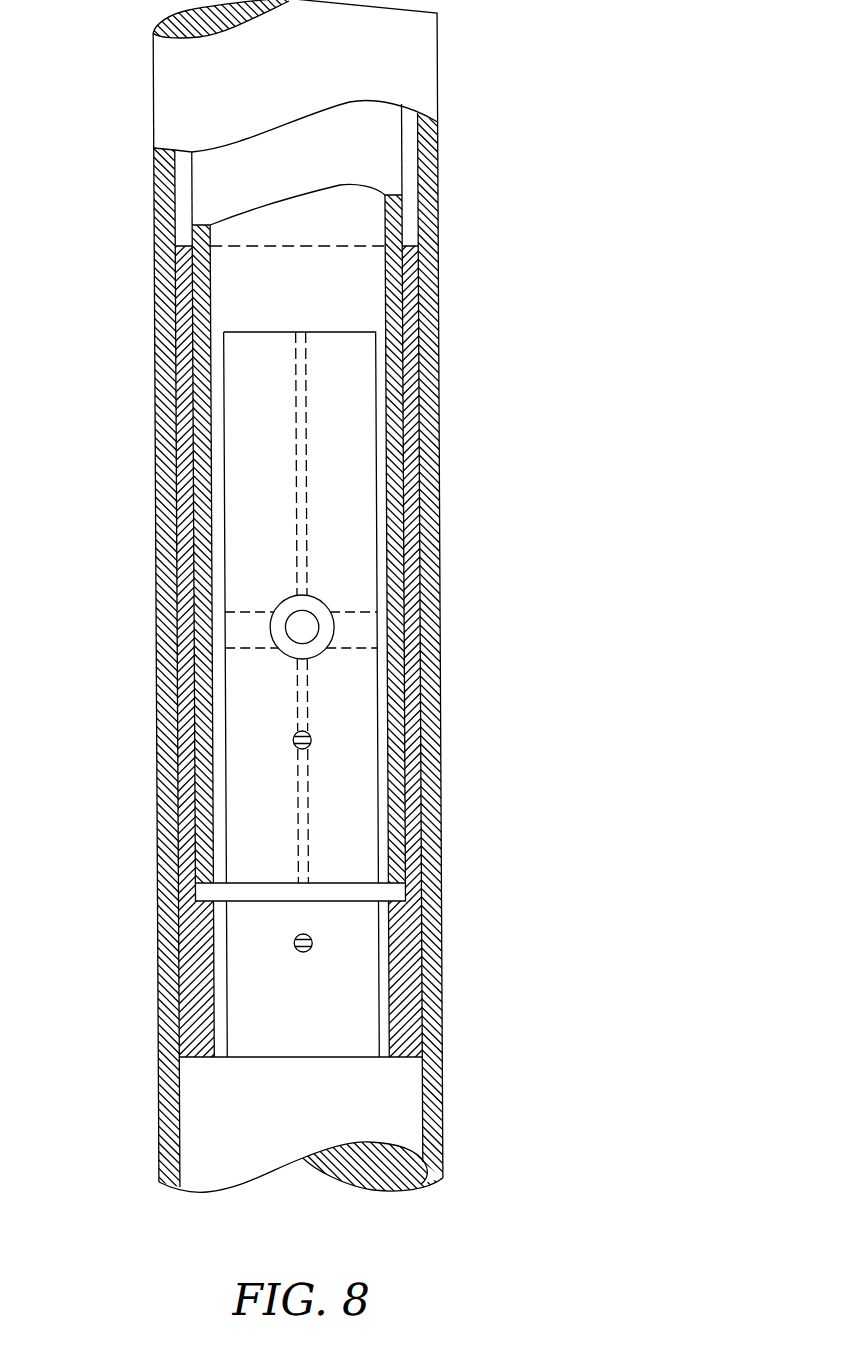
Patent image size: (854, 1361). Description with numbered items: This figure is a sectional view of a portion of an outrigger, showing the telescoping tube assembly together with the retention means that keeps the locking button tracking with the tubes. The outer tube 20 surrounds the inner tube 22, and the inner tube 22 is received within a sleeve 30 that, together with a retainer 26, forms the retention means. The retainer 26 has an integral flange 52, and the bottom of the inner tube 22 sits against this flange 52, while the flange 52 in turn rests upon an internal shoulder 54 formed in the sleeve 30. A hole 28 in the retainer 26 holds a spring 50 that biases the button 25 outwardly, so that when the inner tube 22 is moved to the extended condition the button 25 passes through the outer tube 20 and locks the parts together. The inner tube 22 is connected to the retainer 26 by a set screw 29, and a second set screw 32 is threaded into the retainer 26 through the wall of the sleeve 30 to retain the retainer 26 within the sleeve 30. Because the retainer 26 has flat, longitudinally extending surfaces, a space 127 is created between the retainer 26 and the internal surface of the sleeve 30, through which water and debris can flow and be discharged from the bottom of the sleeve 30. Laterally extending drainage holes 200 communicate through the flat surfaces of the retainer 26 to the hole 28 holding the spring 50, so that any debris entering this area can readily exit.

The outer tube 20 is at (438, 183).
The inner tube 22 is at (388, 220).
The space 127 is at (381, 360).
The retainer 26 is at (345, 830).
The hole 28 is at (330, 637).
The button 25 is at (308, 610).
The spring 50 is at (268, 627).
The drainage holes 200 is at (258, 649).
The set screw 29 is at (308, 740).
The flange 52 is at (394, 892).
The internal shoulder 54 is at (400, 902).
The set screw 32 is at (307, 943).
The sleeve 30 is at (409, 993).